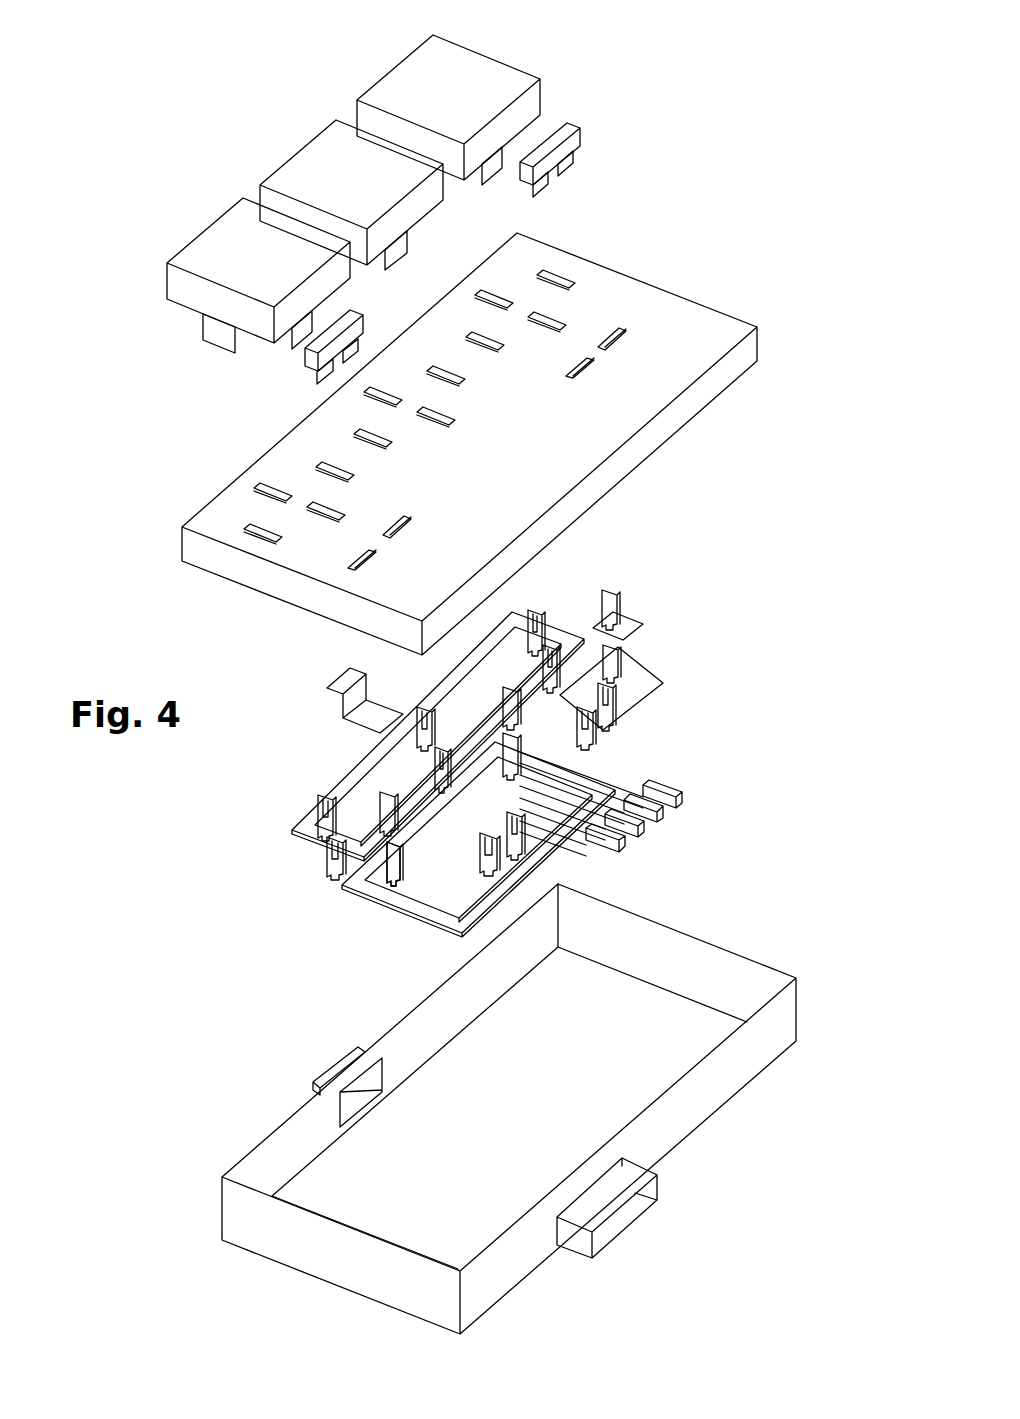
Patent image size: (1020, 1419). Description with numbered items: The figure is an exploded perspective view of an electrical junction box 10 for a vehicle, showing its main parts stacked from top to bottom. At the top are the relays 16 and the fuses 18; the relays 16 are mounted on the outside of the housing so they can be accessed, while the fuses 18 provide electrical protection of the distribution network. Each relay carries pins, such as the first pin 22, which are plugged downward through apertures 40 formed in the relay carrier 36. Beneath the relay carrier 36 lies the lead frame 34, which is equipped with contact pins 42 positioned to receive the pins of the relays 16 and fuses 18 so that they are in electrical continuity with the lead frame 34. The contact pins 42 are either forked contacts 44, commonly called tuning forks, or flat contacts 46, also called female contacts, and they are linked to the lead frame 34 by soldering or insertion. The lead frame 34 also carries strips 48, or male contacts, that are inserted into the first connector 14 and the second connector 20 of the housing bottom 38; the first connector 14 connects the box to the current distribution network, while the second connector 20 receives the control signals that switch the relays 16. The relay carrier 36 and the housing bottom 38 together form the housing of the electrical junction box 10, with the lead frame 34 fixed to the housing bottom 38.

The electrical junction box 10 is at (708, 60).
The first connector 14 is at (583, 1244).
The relays 16 is at (512, 67).
The fuses 18 is at (587, 127).
The second connector 20 is at (340, 1070).
The first pin 22 is at (214, 343).
The lead frame 34 is at (676, 705).
The relay carrier 36 is at (697, 293).
The housing bottom 38 is at (759, 953).
The apertures 40 is at (278, 487).
The contact pins 42 is at (626, 599).
The forked contacts 44 is at (318, 828).
The flat contacts 46 is at (395, 865).
The strips 48 is at (668, 781).